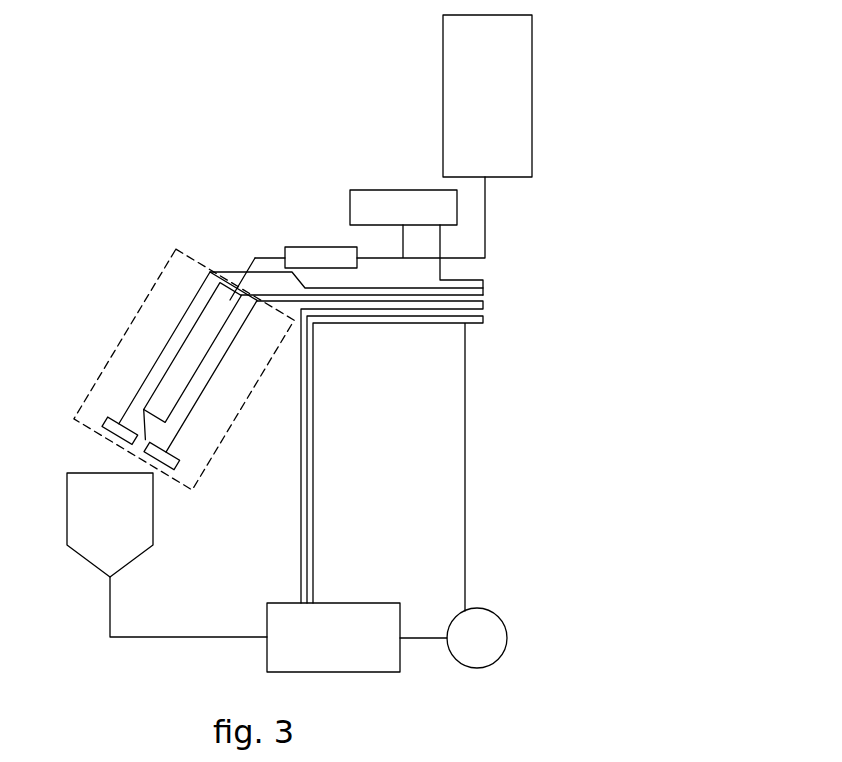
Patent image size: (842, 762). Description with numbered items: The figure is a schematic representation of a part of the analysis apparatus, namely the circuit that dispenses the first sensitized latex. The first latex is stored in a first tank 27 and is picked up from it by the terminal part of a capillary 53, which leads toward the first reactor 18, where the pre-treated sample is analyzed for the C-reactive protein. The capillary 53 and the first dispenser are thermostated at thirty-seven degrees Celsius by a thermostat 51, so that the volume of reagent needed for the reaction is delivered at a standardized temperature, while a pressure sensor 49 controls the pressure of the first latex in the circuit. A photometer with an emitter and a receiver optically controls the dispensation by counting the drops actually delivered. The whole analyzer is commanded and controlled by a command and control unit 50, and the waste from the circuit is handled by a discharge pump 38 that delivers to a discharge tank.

The first tank 27 is at (457, 55).
The pressure sensor 49 is at (392, 200).
The thermostat 51 is at (318, 256).
The capillary 53 is at (255, 258).
The first reactor 18 is at (70, 548).
The command and control unit 50 is at (353, 617).
The discharge pump 38 is at (495, 640).